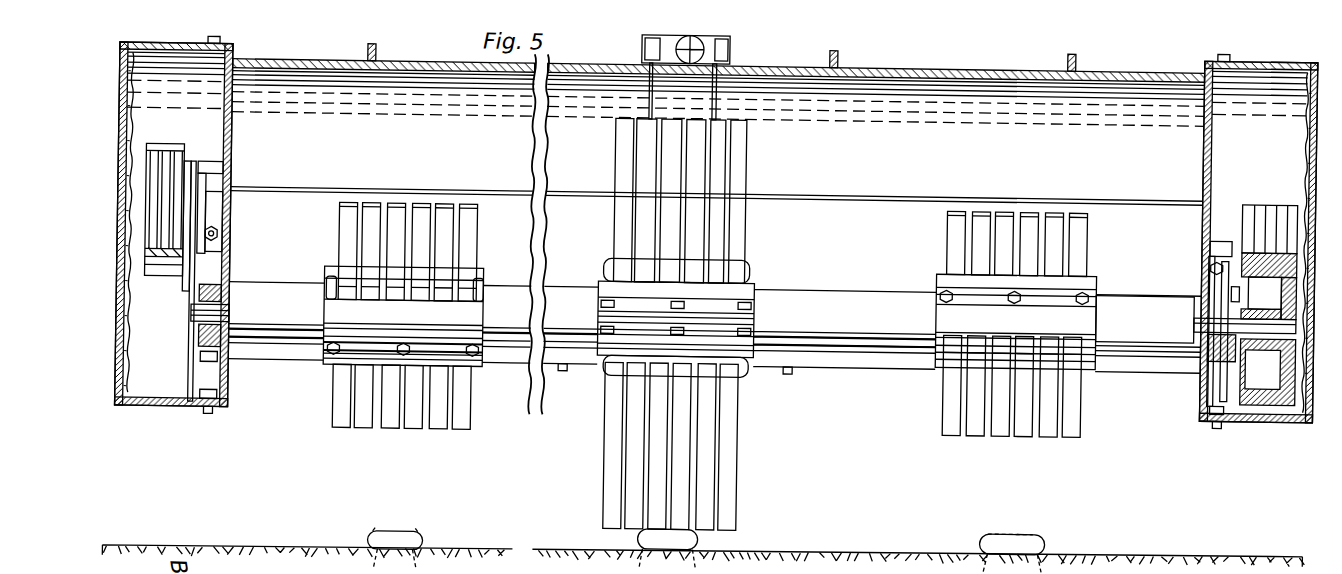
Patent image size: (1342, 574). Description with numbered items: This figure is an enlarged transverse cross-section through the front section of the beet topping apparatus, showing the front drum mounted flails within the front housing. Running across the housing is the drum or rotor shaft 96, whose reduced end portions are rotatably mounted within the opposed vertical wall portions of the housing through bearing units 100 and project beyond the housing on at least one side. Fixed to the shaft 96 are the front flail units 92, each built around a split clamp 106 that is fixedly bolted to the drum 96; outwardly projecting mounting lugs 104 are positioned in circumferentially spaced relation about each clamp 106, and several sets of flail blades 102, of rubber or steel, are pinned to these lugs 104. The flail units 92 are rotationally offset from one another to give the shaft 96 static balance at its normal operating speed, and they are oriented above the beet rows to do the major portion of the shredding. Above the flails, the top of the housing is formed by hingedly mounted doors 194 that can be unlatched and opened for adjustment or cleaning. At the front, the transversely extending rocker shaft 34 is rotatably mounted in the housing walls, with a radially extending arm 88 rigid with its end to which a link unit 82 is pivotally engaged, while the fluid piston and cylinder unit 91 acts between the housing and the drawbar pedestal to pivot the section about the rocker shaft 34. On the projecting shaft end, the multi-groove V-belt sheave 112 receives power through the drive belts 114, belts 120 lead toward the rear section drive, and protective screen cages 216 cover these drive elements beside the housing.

The rocker shaft 34 is at (197, 347).
The link unit 82 is at (185, 280).
The radially extending arm 88 is at (190, 325).
The fluid piston and cylinder unit 91 is at (715, 41).
The front flail unit 92 is at (330, 372).
The drum or rotor shaft 96 is at (812, 291).
The bearing unit 100 is at (1205, 327).
The flail blade 102 is at (370, 409).
The mounting lug 104 is at (610, 361).
The split clamp 106 is at (758, 325).
The multi-groove V-belt sheave 112 is at (1285, 381).
The drive belt 114 is at (1265, 198).
The belt 120 is at (163, 252).
The door 194 is at (900, 56).
The protective screen cage 216 is at (163, 405).